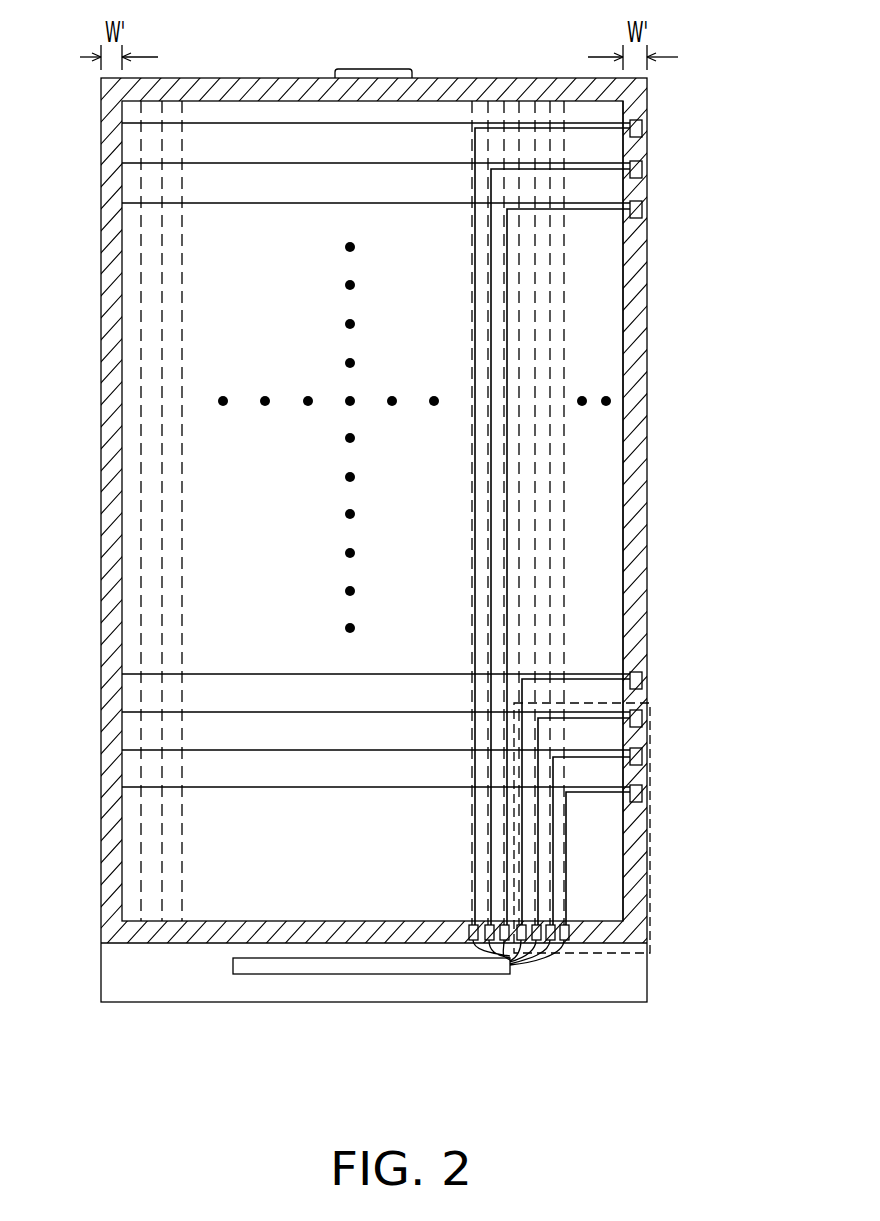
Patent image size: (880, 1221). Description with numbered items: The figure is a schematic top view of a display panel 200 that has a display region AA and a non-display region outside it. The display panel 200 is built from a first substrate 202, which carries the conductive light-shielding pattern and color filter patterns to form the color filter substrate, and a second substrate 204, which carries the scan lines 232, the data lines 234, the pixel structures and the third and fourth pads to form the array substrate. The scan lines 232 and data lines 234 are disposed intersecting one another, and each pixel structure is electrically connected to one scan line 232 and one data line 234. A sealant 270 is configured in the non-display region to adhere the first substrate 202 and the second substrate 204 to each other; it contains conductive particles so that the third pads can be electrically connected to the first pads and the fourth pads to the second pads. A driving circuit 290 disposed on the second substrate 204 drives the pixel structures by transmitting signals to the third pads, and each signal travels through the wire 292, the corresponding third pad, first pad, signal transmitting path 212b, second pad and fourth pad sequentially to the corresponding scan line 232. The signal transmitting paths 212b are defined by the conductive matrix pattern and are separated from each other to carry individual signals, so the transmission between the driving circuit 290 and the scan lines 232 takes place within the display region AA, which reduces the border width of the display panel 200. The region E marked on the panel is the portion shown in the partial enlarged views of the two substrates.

The display panel 200 is at (732, 1106).
The first substrate 202 is at (197, 945).
The second substrate 204 is at (626, 1003).
The sealant 270 is at (245, 88).
The scan lines 232 is at (623, 101).
The signal transmitting paths 212b is at (590, 128).
The data lines 234 is at (142, 405).
The driving circuit 290 is at (302, 965).
The wire 292 is at (533, 962).
The region E is at (650, 782).
The display region AA is at (414, 437).